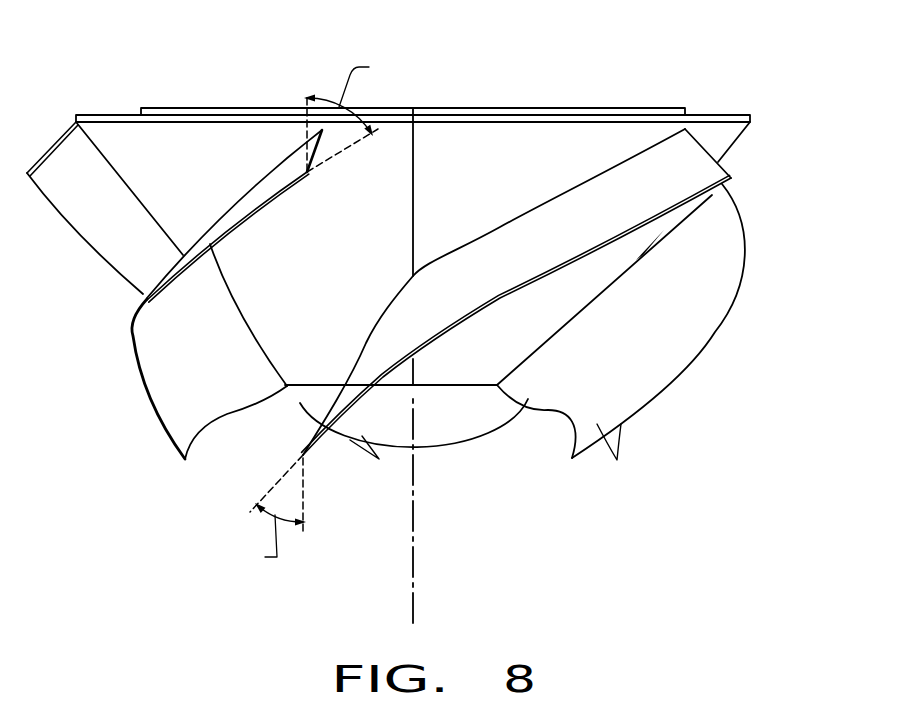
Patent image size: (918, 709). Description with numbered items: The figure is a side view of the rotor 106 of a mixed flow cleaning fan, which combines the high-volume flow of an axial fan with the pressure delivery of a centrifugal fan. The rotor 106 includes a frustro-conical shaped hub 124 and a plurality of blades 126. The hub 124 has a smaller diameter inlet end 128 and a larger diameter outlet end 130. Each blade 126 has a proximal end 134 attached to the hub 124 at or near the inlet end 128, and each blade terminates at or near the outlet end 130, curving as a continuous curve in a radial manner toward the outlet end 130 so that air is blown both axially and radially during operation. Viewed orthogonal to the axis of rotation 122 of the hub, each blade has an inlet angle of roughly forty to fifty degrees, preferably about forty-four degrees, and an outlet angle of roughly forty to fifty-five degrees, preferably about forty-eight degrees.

The rotor 106 is at (147, 89).
The rotation axis 122 is at (413, 565).
The hub 124 is at (488, 173).
The blades 126 is at (110, 270).
The inlet end 128 is at (470, 377).
The outlet end 130 is at (619, 138).
The proximal end 134 is at (220, 417).